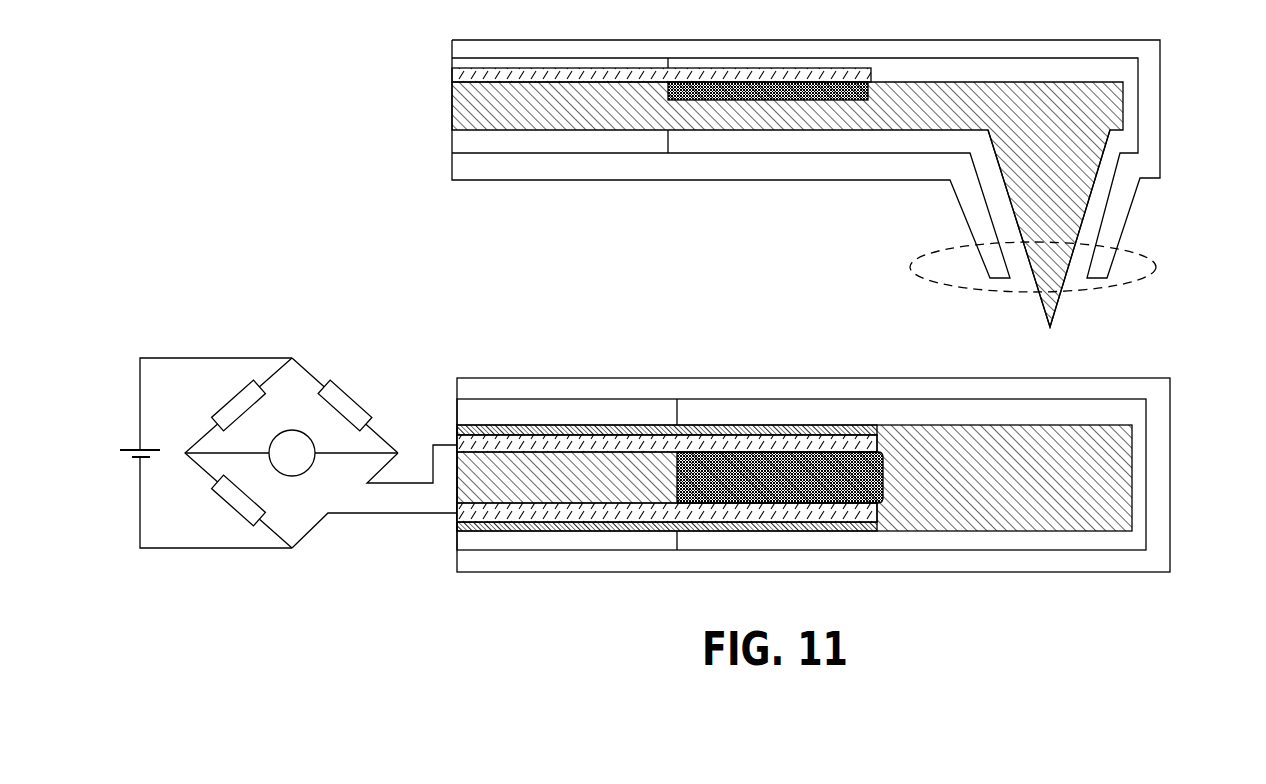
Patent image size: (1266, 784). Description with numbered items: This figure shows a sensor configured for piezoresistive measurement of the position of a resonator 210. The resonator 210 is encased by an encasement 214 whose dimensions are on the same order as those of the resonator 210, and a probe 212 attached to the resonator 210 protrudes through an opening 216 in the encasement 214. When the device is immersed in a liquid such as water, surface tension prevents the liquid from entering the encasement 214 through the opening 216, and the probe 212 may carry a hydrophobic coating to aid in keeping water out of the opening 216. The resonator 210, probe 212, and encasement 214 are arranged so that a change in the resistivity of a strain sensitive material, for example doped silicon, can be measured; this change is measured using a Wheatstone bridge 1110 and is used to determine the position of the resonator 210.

The encasement 214 is at (452, 152).
The resonator 210 is at (767, 130).
The probe 212 is at (1100, 147).
The opening 216 is at (1070, 288).
The Wheatstone bridge 1110 is at (298, 357).